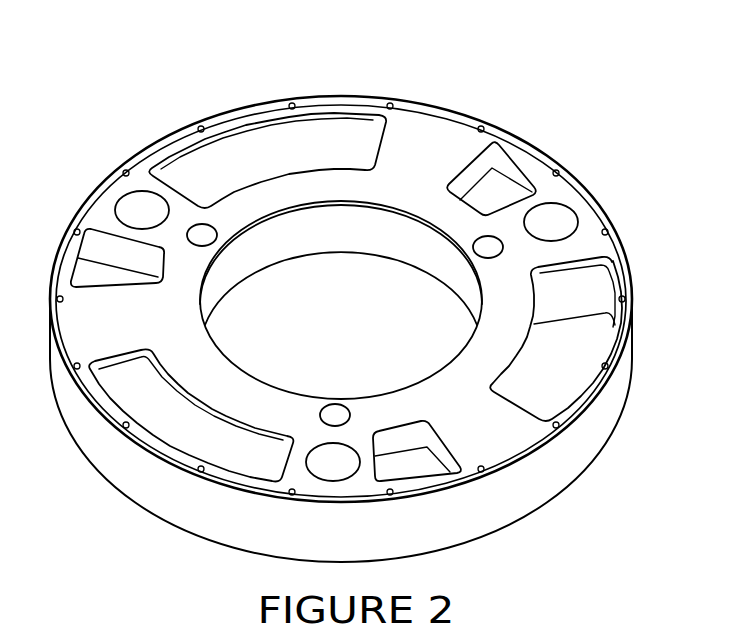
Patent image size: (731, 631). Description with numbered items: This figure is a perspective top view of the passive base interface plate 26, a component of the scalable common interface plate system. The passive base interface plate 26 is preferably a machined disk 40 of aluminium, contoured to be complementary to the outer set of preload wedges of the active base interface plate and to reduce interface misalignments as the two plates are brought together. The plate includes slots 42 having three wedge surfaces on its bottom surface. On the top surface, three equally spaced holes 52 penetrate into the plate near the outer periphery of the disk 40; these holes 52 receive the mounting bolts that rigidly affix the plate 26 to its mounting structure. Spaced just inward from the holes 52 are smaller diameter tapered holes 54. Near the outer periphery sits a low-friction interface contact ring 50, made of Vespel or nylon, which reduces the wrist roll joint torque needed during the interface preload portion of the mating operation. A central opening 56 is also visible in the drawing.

The passive base interface plate 26 is at (192, 86).
The machined disk 40 is at (405, 183).
The slots 42 is at (572, 349).
The low-friction interface contact ring 50 is at (112, 428).
The holes 52 is at (140, 208).
The smaller diameter tapered holes 54 is at (205, 235).
The central opening 56 is at (243, 371).